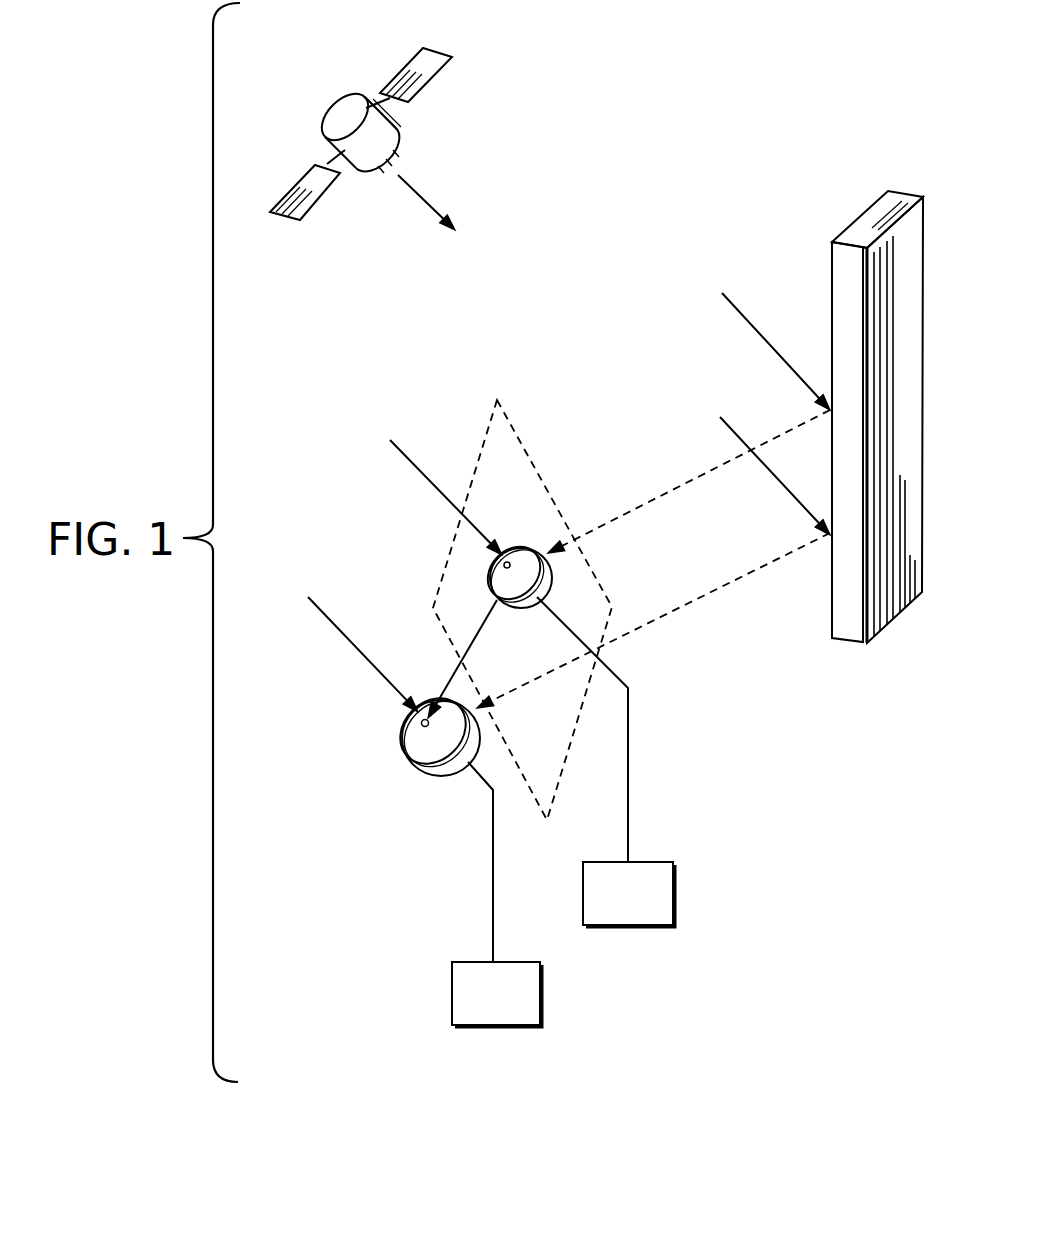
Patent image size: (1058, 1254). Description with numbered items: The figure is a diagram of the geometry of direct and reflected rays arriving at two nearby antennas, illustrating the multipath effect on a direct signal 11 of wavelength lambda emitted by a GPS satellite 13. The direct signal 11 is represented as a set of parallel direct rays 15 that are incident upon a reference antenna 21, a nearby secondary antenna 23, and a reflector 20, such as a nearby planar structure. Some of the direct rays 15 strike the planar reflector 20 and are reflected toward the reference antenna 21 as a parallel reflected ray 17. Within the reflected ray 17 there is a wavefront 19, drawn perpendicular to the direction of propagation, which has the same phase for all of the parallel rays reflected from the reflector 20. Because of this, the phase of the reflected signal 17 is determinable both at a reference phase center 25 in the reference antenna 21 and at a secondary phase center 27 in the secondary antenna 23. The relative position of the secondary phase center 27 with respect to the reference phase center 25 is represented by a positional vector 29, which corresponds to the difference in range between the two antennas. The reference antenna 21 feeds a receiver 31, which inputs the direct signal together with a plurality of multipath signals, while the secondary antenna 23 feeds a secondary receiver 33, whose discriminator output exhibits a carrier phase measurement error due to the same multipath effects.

The direct signal 11 is at (420, 193).
The GPS satellite 13 is at (335, 102).
The direct rays 15 is at (743, 316).
The reflected ray 17 is at (680, 486).
The wavefront 19 is at (528, 455).
The reflector 20 is at (868, 208).
The reference antenna 21 is at (516, 699).
The secondary antenna 23 is at (420, 823).
The reference phase center 25 is at (505, 566).
The secondary phase center 27 is at (417, 722).
The positional vector 29 is at (470, 640).
The receiver 31 is at (616, 895).
The secondary receiver 33 is at (484, 995).